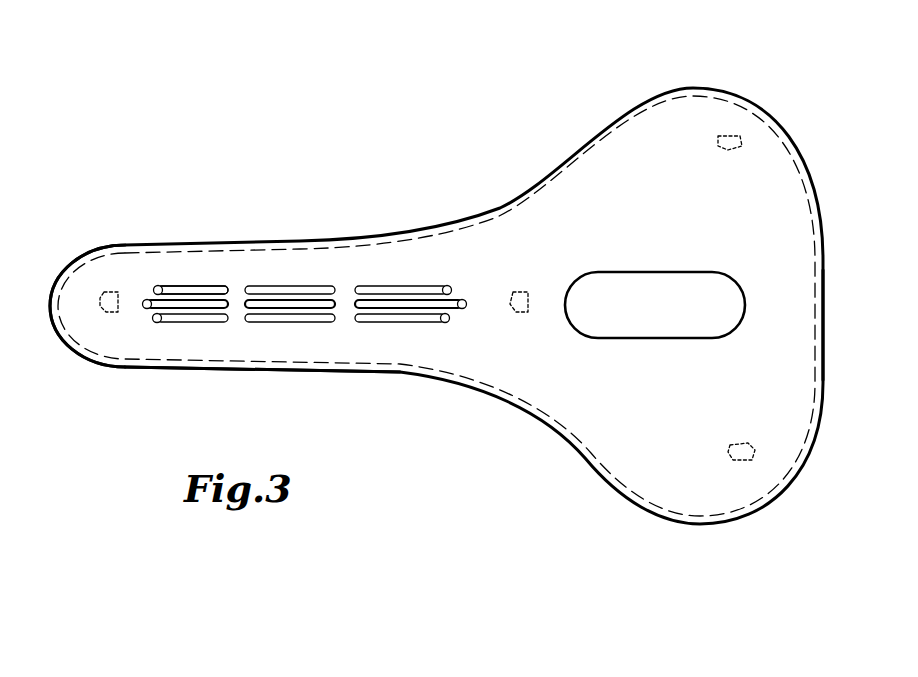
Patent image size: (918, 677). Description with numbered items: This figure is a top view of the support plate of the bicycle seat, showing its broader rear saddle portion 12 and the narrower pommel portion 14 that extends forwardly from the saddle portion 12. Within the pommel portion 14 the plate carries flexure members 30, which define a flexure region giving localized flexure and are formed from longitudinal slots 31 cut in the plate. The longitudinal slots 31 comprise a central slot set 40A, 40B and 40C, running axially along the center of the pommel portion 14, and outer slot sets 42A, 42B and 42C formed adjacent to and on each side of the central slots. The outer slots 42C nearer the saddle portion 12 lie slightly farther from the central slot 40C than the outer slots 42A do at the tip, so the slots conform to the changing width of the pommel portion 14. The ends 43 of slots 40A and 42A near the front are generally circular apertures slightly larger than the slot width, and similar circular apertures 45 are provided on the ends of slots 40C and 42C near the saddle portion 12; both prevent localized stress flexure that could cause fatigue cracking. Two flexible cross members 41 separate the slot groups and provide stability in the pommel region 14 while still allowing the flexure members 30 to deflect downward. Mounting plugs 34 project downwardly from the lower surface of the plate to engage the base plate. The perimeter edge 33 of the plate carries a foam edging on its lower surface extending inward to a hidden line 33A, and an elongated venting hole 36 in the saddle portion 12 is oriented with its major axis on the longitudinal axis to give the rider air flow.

The saddle portion 12 is at (666, 536).
The pommel portion 14 is at (130, 378).
The flexure members 30 is at (131, 276).
The longitudinal slots 31 is at (180, 270).
The perimeter edge 33 is at (672, 88).
The hidden line 33A is at (824, 272).
The mounting plugs 34 is at (105, 290).
The venting hole 36 is at (634, 290).
The central slot 40A is at (210, 309).
The central slot 40B is at (303, 309).
The central slot 40C is at (437, 323).
The cross members 41 is at (236, 296).
The outer slots 42A is at (207, 286).
The outer slots 42B is at (273, 286).
The outer slots 42C is at (384, 286).
The ends 43 is at (156, 286).
The circular apertures 45 is at (450, 319).